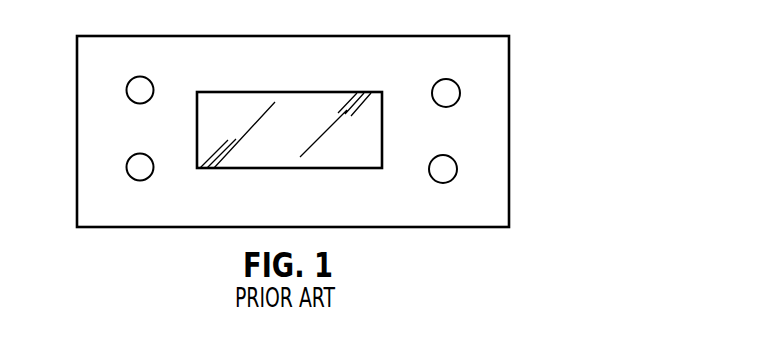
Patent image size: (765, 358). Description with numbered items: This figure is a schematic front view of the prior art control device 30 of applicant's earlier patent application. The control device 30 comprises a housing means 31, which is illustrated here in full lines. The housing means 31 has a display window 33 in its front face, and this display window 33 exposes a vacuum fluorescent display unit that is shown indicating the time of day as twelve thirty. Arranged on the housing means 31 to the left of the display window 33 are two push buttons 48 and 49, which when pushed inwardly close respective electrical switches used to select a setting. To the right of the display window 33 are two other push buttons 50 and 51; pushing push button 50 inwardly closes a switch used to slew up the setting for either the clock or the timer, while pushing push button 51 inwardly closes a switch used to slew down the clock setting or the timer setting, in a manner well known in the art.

The control device 30 is at (337, 113).
The housing means 31 is at (508, 200).
The display window 33 is at (298, 92).
The push button 48 is at (136, 91).
The push button 49 is at (136, 167).
The push button 50 is at (453, 91).
The push button 51 is at (450, 167).